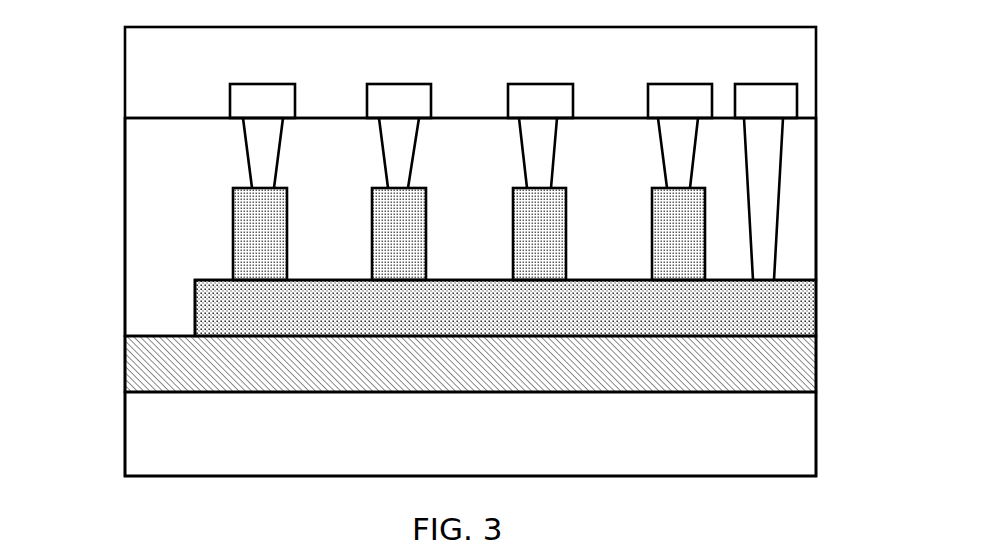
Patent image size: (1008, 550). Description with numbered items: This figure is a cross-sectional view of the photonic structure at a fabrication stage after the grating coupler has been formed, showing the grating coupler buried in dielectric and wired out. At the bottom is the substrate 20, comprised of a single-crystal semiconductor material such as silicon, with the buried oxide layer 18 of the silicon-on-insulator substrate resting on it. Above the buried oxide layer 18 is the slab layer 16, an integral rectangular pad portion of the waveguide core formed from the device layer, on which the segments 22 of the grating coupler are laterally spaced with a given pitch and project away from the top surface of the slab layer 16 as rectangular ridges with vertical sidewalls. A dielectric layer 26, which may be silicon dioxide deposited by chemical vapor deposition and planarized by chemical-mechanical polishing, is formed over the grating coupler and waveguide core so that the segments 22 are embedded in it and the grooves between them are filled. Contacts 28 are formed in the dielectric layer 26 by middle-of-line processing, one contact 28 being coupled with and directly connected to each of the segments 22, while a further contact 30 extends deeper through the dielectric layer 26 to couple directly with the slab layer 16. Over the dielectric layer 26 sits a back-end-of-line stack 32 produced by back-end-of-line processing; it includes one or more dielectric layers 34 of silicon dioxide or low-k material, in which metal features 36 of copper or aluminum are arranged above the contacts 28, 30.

The back-end-of-line stack 32 is at (108, 70).
The dielectric layer 34 is at (753, 57).
The metal features 36 is at (255, 103).
The dielectric layer 26 is at (168, 220).
The contacts 28 is at (258, 143).
The contact 30 is at (763, 180).
The segments 22 is at (250, 235).
The slab layer 16 is at (232, 313).
The buried oxide layer 18 is at (167, 360).
The substrate 20 is at (160, 460).